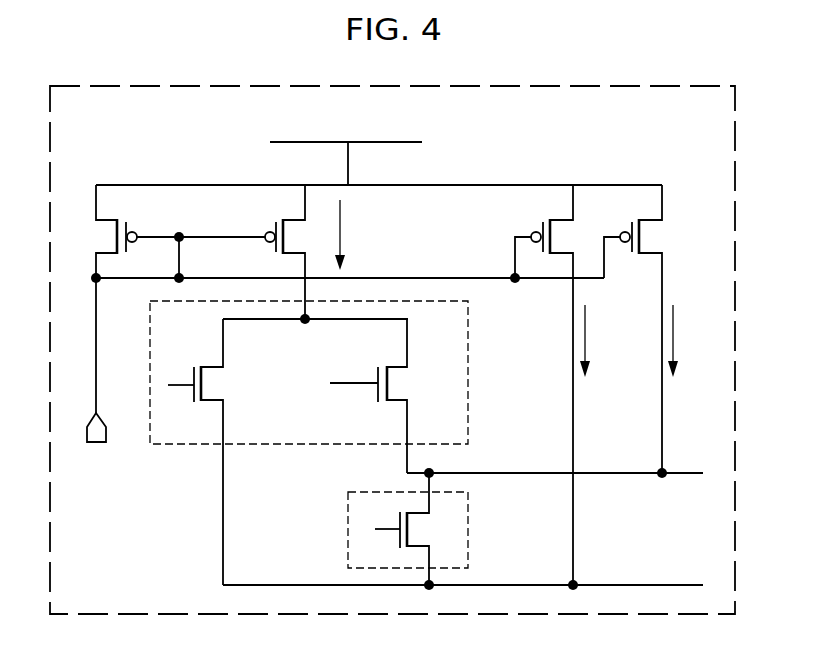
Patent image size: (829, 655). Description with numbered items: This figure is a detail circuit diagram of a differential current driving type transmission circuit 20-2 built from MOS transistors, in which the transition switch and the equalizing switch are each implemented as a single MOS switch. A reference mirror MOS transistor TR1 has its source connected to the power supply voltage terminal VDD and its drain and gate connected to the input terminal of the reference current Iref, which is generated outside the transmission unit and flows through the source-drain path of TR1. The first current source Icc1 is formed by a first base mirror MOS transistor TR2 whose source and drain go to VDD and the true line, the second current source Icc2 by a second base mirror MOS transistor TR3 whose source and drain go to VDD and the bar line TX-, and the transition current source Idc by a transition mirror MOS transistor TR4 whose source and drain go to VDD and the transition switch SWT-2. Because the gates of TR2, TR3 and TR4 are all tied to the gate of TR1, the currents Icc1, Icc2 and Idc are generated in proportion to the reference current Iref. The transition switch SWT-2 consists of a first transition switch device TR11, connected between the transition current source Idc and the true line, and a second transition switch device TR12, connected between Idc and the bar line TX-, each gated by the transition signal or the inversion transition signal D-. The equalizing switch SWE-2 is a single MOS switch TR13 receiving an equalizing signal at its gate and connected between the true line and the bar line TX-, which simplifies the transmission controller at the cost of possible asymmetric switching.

The transmission circuit 20-2 is at (735, 230).
The power supply voltage terminal VDD is at (346, 150).
The reference mirror MOS transistor TR1 is at (129, 231).
The first base mirror MOS transistor TR2 is at (641, 329).
The second base mirror MOS transistor TR3 is at (550, 385).
The transition mirror MOS transistor TR4 is at (256, 252).
The first transition switch device TR11 is at (403, 396).
The second transition switch device TR12 is at (219, 452).
The single MOS switch TR13 is at (427, 529).
The transition switch SWT-2 is at (197, 444).
The equalizing switch SWE-2 is at (348, 530).
The transition current source Idc is at (355, 235).
The first current source Icc1 is at (692, 341).
The second current source Icc2 is at (605, 341).
The reference current Iref is at (99, 373).
The bar line TX- is at (465, 574).
The inversion transition signal D- is at (354, 394).